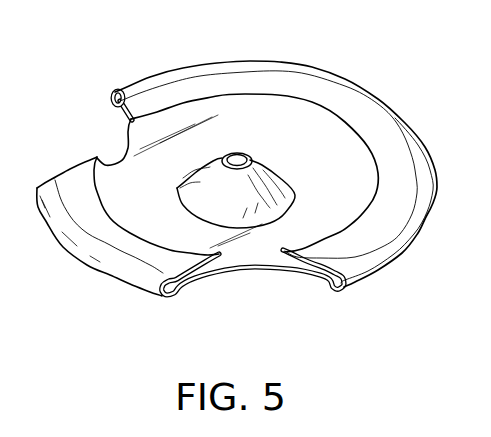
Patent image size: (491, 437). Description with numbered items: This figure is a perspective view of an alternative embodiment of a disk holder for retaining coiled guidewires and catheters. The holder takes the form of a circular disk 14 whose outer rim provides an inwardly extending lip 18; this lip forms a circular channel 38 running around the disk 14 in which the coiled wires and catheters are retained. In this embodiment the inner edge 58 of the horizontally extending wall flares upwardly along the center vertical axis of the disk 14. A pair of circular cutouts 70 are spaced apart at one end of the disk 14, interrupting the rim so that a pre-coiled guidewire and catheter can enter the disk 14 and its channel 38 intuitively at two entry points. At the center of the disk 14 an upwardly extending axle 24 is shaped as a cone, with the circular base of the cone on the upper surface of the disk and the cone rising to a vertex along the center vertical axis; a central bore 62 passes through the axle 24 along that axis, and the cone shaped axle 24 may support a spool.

The circular disk 14 is at (288, 127).
The inwardly extending lip 18 is at (277, 91).
The axle 24 is at (250, 187).
The channel 38 is at (112, 97).
The inner edge 58 is at (157, 110).
The central bore 62 is at (233, 151).
The circular cutouts 70 is at (97, 135).